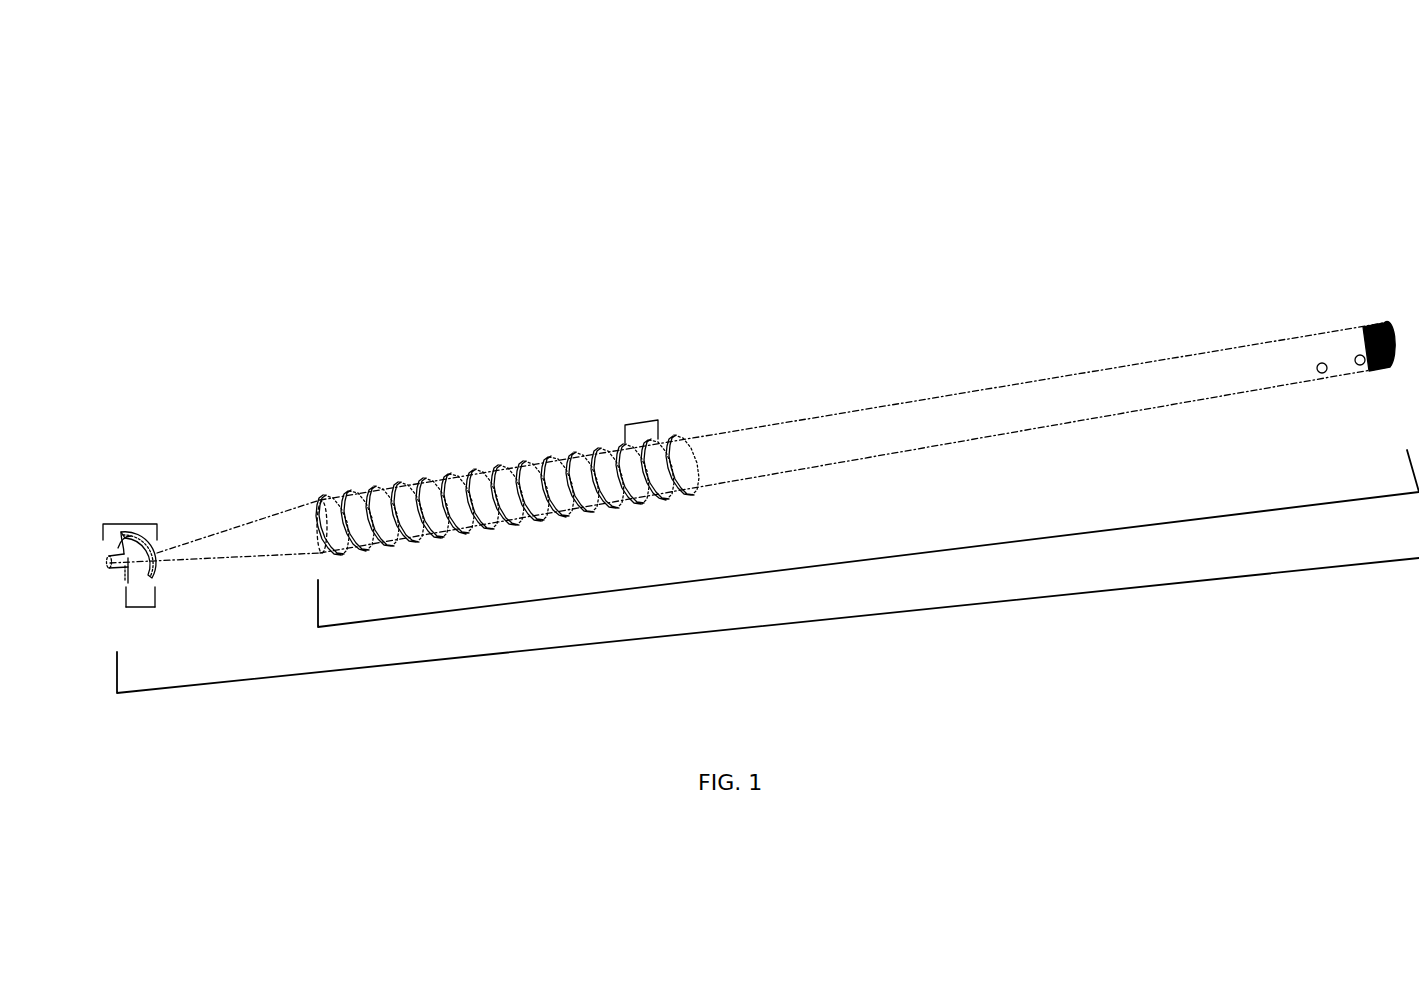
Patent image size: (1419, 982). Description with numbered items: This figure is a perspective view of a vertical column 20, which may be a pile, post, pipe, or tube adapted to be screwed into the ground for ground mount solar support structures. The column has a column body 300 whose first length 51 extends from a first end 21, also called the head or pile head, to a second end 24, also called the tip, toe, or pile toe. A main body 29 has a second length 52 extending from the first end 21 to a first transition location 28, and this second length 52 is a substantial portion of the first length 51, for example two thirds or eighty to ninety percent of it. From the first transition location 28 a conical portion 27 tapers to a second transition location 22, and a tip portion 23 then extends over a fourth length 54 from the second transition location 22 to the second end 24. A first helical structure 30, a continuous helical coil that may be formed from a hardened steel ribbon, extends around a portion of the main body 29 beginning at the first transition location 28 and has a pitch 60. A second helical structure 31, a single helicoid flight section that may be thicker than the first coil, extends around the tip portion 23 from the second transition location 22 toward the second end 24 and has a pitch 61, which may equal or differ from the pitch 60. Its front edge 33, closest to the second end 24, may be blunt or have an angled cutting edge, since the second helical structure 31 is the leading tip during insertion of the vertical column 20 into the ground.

The vertical column 20 is at (1097, 170).
The first end 21 is at (1393, 358).
The second transition location 22 is at (158, 552).
The tip portion 23 is at (136, 569).
The second end 24 is at (107, 562).
The conical portion 27 is at (257, 545).
The first transition location 28 is at (310, 500).
The main body 29 is at (918, 438).
The first helical structure 30 is at (368, 490).
The second helical structure 31 is at (131, 538).
The front edge 33 is at (121, 578).
The first length 51 is at (1182, 587).
The second length 52 is at (1073, 533).
The fourth length 54 is at (117, 521).
The pitch 60 is at (638, 423).
The pitch 61 is at (132, 610).
The column body 300 is at (1190, 368).